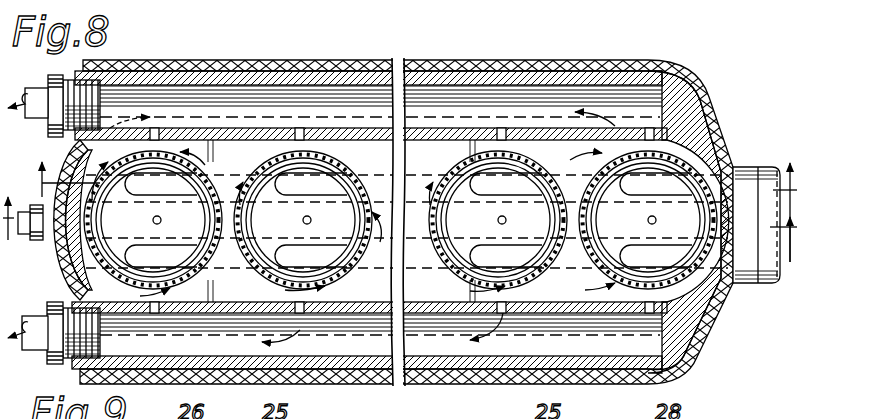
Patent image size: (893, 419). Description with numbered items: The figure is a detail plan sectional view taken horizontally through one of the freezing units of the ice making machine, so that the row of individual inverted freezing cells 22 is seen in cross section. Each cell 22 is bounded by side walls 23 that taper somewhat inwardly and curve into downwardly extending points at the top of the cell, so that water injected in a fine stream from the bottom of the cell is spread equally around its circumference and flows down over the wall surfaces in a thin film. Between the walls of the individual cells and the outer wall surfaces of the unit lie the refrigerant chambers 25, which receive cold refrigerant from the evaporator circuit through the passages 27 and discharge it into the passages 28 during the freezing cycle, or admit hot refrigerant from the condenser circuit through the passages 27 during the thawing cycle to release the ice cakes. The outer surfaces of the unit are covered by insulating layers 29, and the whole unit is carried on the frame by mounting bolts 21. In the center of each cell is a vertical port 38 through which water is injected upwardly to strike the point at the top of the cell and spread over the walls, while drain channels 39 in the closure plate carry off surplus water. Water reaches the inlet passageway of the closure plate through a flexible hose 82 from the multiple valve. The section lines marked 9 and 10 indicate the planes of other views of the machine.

The mounting bolt 21 is at (702, 80).
The inverted freezing cell 22 is at (400, 220).
The side wall 23 is at (277, 151).
The refrigerant chamber 25 is at (587, 303).
The passage 27 is at (596, 352).
The passage 28 is at (495, 102).
The insulating layer 29 is at (410, 62).
The vertical port 38 is at (383, 221).
The drain channel 39 is at (408, 221).
The flexible hose 82 is at (28, 240).
The section line 9- 9 is at (400, 259).
The section line 10- 10 is at (40, 182).